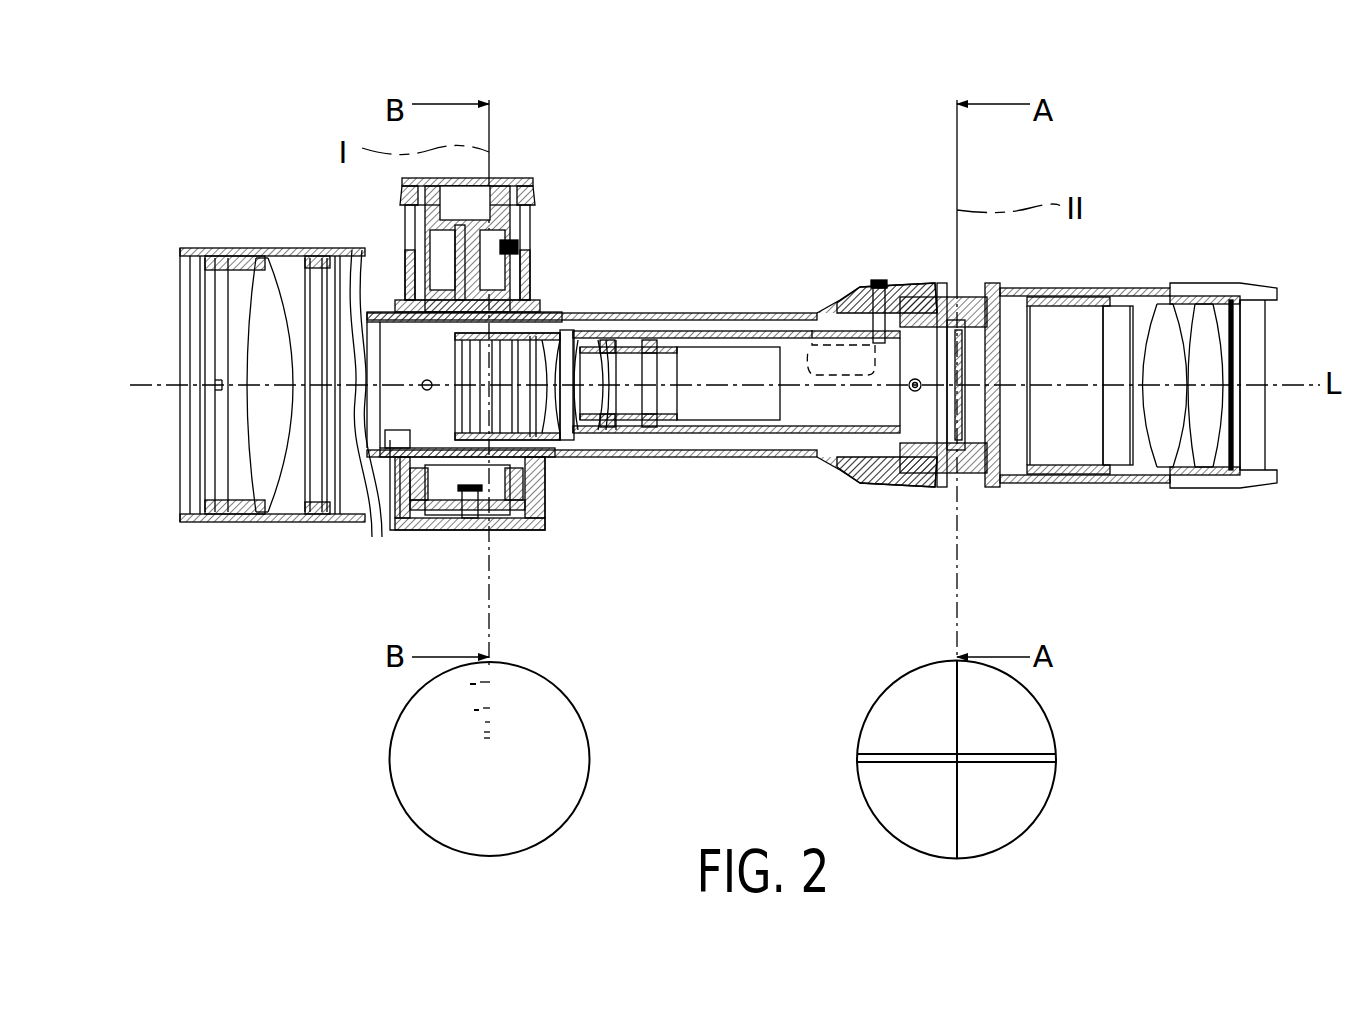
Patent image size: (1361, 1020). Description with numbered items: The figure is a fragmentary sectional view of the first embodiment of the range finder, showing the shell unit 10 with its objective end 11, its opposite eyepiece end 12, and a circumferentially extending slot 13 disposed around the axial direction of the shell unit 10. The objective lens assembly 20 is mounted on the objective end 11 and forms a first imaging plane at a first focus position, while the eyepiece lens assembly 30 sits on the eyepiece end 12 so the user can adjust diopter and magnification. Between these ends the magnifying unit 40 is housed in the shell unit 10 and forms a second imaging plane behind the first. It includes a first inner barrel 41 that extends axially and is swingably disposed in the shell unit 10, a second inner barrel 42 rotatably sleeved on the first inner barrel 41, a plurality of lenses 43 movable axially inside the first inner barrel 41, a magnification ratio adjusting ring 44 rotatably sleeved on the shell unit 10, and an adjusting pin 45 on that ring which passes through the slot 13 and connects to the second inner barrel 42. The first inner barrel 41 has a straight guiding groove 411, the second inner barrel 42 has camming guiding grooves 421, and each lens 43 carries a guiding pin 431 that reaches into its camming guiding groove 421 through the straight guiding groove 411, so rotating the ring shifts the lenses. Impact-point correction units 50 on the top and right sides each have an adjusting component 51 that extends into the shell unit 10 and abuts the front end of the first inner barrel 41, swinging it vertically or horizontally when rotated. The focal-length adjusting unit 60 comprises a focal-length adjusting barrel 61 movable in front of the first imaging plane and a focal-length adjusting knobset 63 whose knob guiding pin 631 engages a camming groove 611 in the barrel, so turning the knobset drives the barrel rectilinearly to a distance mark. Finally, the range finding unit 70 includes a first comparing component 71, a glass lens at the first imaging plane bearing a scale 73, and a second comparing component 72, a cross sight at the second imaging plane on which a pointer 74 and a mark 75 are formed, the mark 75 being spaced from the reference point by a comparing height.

The shell unit 10 is at (768, 315).
The objective end 11 is at (264, 262).
The eyepiece end 12 is at (1135, 470).
The circumferentially extending slot 13 is at (813, 330).
The objective lens assembly 20 is at (200, 250).
The eyepiece lens assembly 30 is at (1255, 288).
The magnifying unit 40 is at (897, 292).
The first inner barrel 41 is at (766, 433).
The straight guiding groove 411 is at (727, 335).
The second inner barrel 42 is at (716, 423).
The camming guiding grooves 421 is at (622, 343).
The lenses 43 is at (606, 428).
The guiding pin 431 is at (603, 345).
The magnification ratio adjusting ring 44 is at (950, 332).
The adjusting pin 45 is at (878, 282).
The impact-point correction unit 50 is at (523, 178).
The adjusting component 51 is at (475, 230).
The focal-length adjusting unit 60 is at (502, 530).
The focal-length adjusting barrel 61 is at (378, 445).
The camming groove 611 is at (401, 470).
The focal-length adjusting knobset 63 is at (530, 530).
The knob guiding pin 631 is at (440, 455).
The range finding unit 70 is at (536, 270).
The first comparing component 71 is at (522, 487).
The second comparing component 72 is at (906, 483).
The scale 73 is at (487, 722).
The pointer 74 is at (960, 860).
The mark 75 is at (1000, 755).